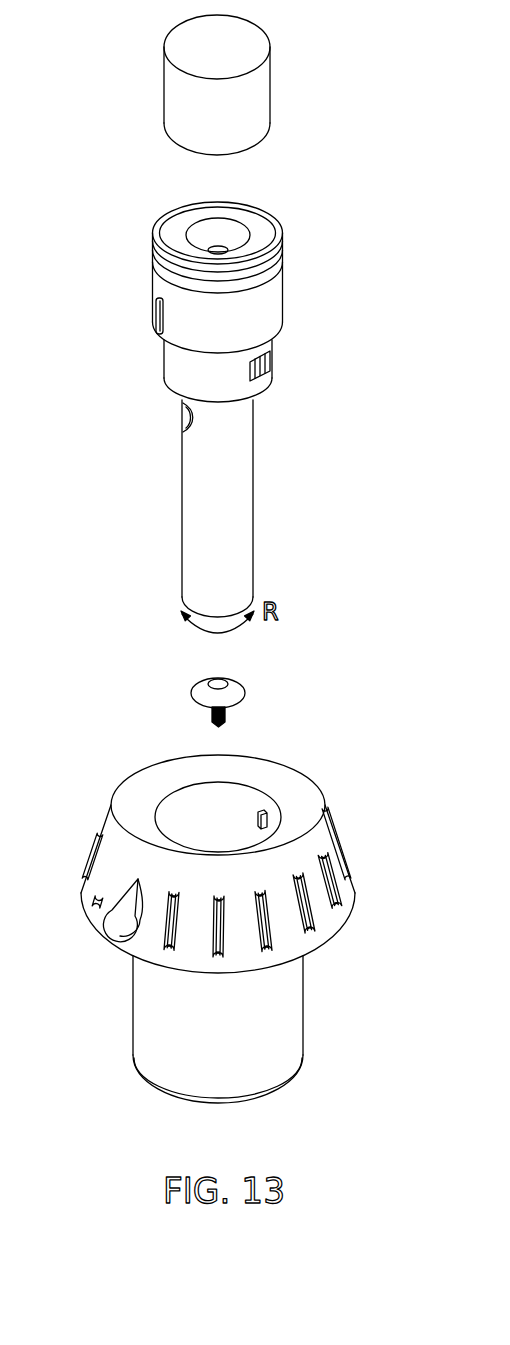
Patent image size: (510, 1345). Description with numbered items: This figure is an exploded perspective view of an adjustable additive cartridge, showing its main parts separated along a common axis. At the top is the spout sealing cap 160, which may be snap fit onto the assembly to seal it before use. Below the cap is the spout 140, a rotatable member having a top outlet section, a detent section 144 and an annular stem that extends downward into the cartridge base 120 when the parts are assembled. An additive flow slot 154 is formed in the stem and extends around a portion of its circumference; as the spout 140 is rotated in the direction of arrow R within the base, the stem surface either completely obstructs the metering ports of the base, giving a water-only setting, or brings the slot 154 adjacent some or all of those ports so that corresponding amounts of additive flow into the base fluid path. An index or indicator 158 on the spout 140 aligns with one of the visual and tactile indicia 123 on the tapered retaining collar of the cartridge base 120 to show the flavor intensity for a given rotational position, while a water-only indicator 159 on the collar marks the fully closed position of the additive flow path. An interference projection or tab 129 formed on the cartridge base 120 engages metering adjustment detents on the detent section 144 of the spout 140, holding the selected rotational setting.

The spout sealing cap 160 is at (272, 84).
The spout 140 is at (283, 292).
The indicator 158 is at (157, 317).
The detent section 144 is at (272, 364).
The additive flow slot 154 is at (186, 416).
The visual and tactile indicia 123 is at (348, 862).
The interference projection or tab 129 is at (264, 811).
The water-only indicator 159 is at (122, 925).
The cartridge base 120 is at (303, 1018).